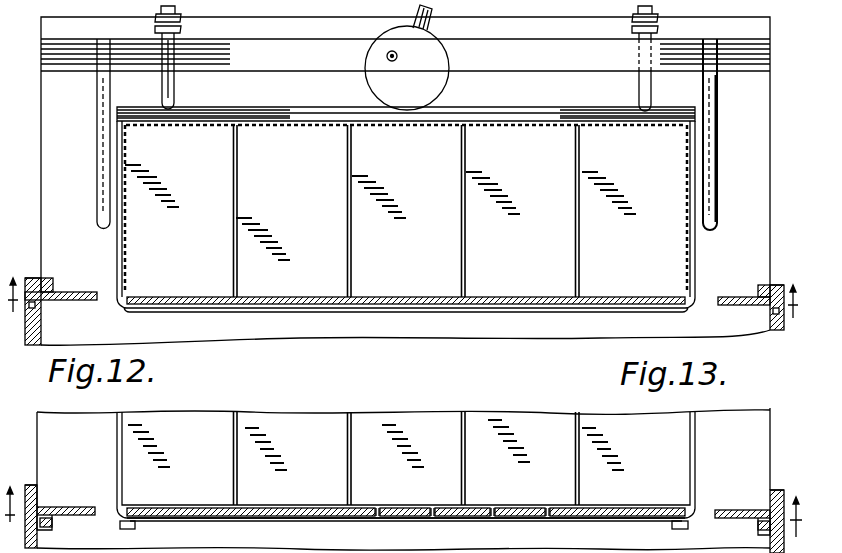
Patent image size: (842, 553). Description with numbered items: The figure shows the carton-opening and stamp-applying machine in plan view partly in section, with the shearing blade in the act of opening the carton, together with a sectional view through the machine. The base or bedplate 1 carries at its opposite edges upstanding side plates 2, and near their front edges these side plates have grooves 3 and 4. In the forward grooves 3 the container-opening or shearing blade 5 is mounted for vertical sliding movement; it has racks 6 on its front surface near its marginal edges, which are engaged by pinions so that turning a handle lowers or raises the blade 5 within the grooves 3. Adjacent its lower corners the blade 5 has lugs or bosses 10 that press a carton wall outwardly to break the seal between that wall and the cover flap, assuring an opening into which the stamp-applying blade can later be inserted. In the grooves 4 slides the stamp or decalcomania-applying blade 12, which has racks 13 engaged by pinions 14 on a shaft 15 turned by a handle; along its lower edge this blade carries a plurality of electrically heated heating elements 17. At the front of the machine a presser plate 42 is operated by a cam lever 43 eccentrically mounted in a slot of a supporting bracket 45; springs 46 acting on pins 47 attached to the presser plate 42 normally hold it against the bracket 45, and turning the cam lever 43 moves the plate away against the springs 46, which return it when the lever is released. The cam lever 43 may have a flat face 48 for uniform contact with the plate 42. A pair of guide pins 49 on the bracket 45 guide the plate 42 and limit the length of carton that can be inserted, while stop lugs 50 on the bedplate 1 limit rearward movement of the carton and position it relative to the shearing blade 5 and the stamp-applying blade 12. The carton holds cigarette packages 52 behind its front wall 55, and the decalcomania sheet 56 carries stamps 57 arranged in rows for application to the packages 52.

In FIG. 12, the base or bedplate 1 is at (41, 190).
In FIG. 13, the base or bedplate 1 is at (765, 446).
In FIG. 12, the side plates 2 is at (45, 338).
In FIG. 13, the side plates 2 is at (778, 490).
In FIG. 12, the grooves 3 is at (33, 278).
In FIG. 13, the grooves 3 is at (40, 505).
In FIG. 12, the grooves 4 is at (40, 305).
In FIG. 13, the grooves 4 is at (30, 485).
In FIG. 12, the container-opening or shearing blade 5 is at (505, 297).
In FIG. 12, the racks 6 is at (55, 290).
In FIG. 12, the lugs or bosses 10 is at (135, 306).
In FIG. 13, the stamp or decalcomania-applying blade 12 is at (75, 507).
In FIG. 13, the racks 13 is at (40, 530).
In FIG. 13, the pinions 14 is at (407, 520).
In FIG. 12, the shaft 15 is at (406, 311).
In FIG. 13, the heating elements 17 is at (200, 521).
In FIG. 12, the presser plate 42 is at (527, 112).
In FIG. 12, the cam lever 43 is at (366, 82).
In FIG. 12, the supporting bracket 45 is at (505, 60).
In FIG. 12, the springs 46 is at (178, 28).
In FIG. 12, the pins 47 is at (176, 92).
In FIG. 12, the flat face 48 is at (418, 97).
In FIG. 12, the guide pins 49 is at (97, 135).
In FIG. 13, the stop lugs 50 is at (132, 529).
In FIG. 12, the cigarette packages 52 is at (206, 260).
In FIG. 13, the cigarette packages 52 is at (348, 418).
In FIG. 13, the front wall 55 is at (412, 521).
In FIG. 13, the sheet 56 is at (488, 506).
In FIG. 13, the stamps 57 is at (172, 505).